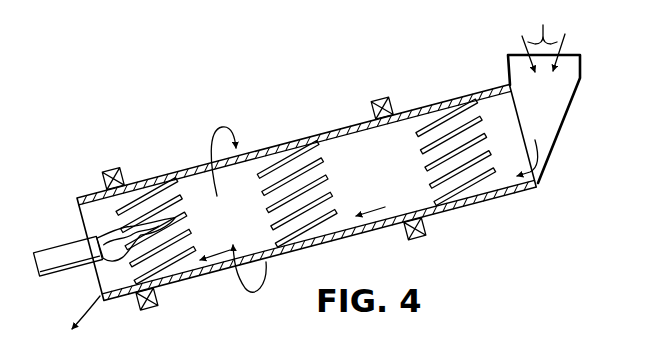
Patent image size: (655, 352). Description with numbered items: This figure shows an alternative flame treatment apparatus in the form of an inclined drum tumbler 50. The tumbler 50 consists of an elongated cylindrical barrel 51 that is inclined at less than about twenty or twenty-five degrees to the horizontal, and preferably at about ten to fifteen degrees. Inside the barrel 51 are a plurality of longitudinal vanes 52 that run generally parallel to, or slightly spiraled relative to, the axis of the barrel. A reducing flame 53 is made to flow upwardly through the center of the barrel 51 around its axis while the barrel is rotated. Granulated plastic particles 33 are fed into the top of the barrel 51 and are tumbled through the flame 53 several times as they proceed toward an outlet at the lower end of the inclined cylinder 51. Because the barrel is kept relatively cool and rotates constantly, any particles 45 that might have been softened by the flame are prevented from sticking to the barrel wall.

The granulated plastic particles 33 is at (544, 92).
The particles 45 is at (85, 313).
The inclined drum tumbler 50 is at (306, 95).
The elongated cylindrical barrel 51 is at (270, 145).
The longitudinal vanes 52 is at (152, 184).
The reducing flame 53 is at (112, 232).